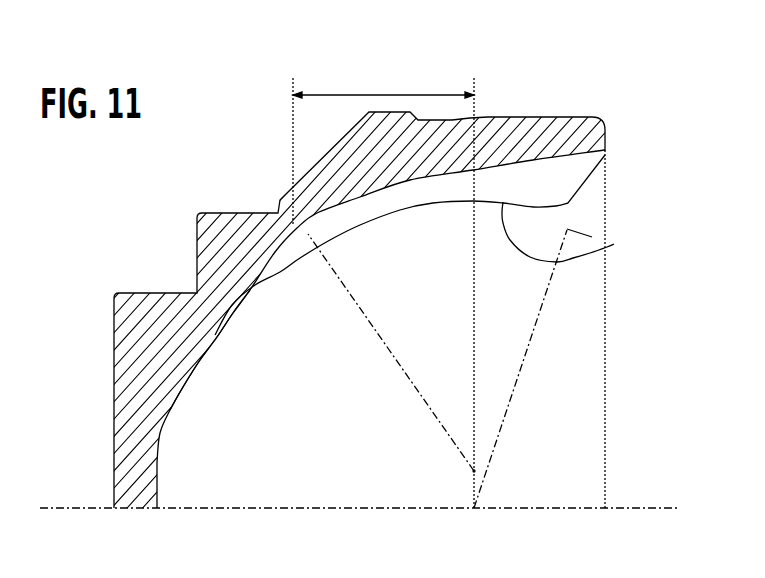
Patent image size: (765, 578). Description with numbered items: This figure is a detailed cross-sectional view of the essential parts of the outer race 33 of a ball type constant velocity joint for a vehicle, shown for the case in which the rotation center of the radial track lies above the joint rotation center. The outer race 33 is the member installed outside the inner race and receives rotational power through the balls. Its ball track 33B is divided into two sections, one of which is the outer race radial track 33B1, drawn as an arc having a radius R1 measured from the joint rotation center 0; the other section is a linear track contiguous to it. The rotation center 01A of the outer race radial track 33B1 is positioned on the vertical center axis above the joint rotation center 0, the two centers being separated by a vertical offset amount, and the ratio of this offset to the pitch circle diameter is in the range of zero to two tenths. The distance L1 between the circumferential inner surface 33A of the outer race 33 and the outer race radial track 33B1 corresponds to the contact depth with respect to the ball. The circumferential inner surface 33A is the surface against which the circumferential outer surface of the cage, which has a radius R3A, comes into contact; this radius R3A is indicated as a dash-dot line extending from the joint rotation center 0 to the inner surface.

The outer race 33 is at (147, 305).
The circumferential inner surface 33A is at (568, 228).
The ball track 33B is at (313, 237).
The outer race radial track 33B1 is at (375, 93).
The distance L1 is at (250, 292).
The radius R1 is at (388, 349).
The radius R3A is at (524, 372).
The rotation center 01A is at (474, 473).
The joint rotation center 0 is at (473, 512).